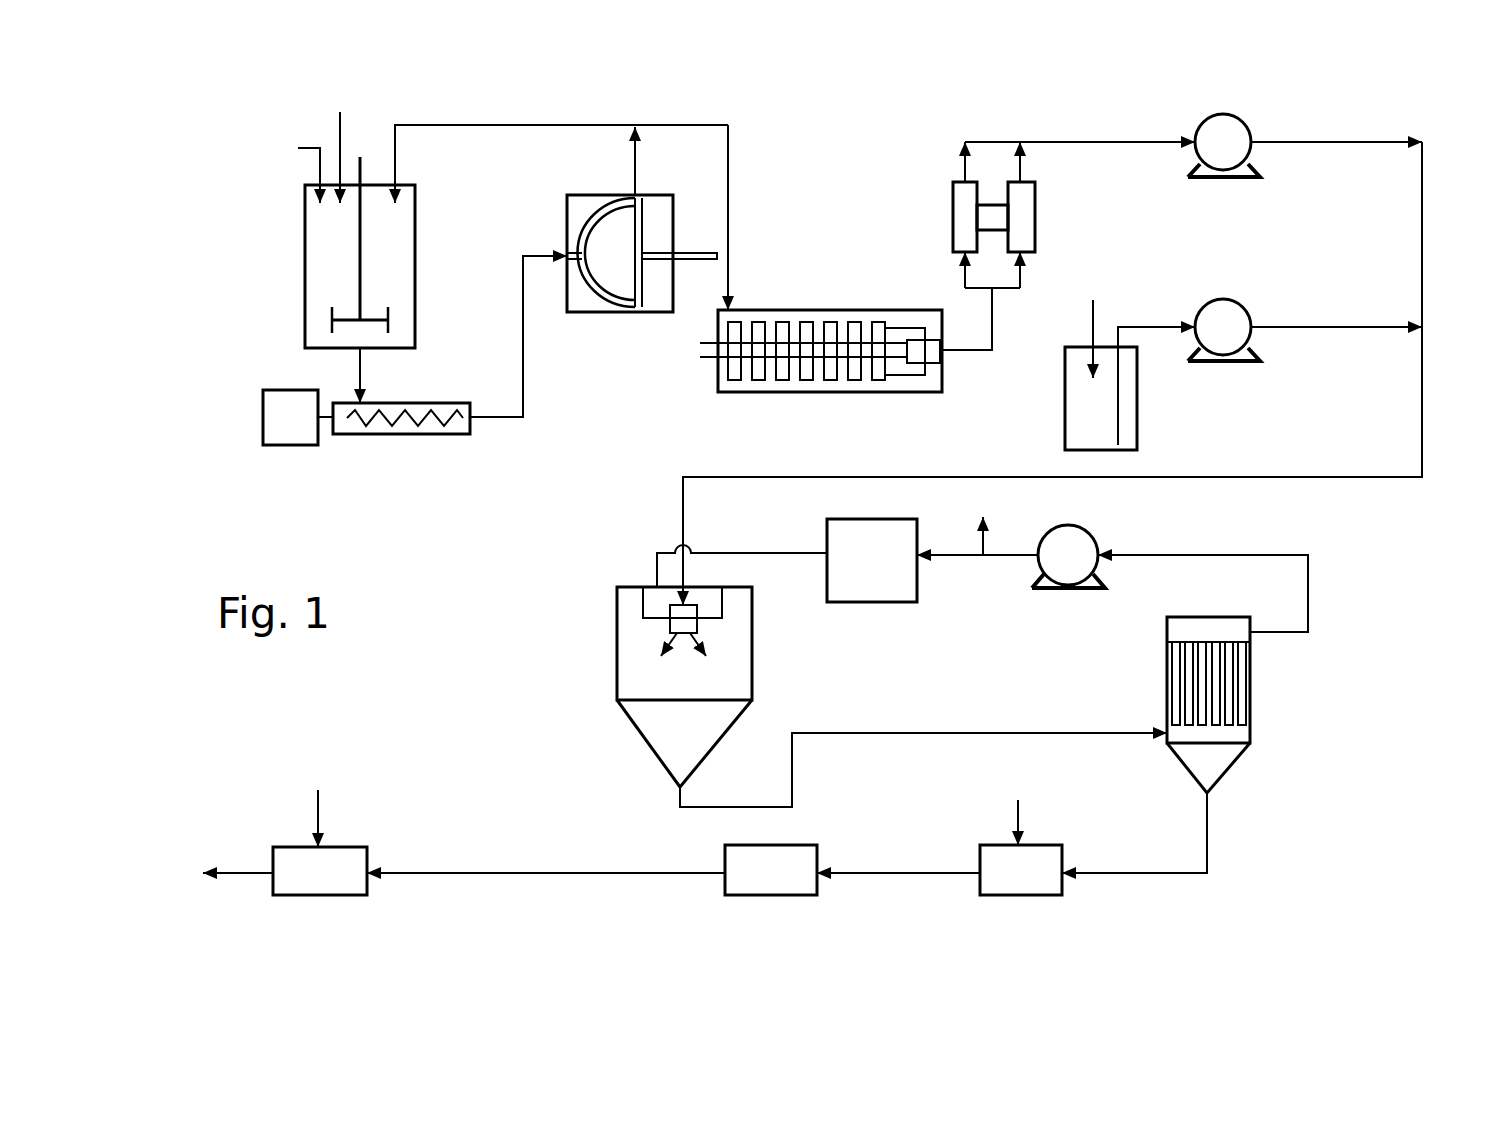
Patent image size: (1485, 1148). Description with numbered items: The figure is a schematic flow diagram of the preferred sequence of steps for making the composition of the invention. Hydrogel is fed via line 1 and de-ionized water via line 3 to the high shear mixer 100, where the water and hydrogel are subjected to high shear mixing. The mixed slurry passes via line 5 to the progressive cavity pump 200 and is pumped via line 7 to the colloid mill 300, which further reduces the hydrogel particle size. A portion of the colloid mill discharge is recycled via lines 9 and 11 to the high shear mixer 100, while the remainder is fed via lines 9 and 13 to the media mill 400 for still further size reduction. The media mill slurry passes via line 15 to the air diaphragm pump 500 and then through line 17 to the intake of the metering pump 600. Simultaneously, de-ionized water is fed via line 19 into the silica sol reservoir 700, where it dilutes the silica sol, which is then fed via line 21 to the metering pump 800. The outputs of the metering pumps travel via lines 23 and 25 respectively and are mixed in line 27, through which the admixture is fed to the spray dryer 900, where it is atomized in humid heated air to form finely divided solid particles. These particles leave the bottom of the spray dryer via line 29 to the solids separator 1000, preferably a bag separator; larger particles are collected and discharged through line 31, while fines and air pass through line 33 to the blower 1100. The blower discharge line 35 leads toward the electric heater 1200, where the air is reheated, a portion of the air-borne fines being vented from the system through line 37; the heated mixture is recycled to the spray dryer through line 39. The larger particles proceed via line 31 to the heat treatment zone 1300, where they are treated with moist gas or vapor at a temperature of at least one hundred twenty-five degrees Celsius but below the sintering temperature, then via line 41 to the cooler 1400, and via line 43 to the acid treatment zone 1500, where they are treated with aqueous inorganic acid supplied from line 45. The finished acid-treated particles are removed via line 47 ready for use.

The line 1 is at (317, 150).
The line 3 is at (341, 142).
The line 5 is at (358, 384).
The line 7 is at (523, 322).
The line 9 is at (635, 162).
The line 11 is at (512, 125).
The line 13 is at (728, 157).
The line 15 is at (992, 325).
The line 17 is at (1078, 142).
The line 19 is at (1092, 335).
The line 21 is at (1136, 327).
The line 23 is at (1307, 142).
The line 25 is at (1307, 327).
The line 27 is at (1422, 232).
The line 29 is at (968, 733).
The line 31 is at (1208, 842).
The line 33 is at (1308, 607).
The blower outlet stream to heater 35 is at (962, 555).
The line 37 is at (985, 543).
The line 39 is at (710, 553).
The line 41 is at (875, 873).
The line 43 is at (573, 873).
The line 45 is at (320, 800).
The line 47 is at (240, 871).
The high shear mixer 100 is at (415, 215).
The progressive cavity pump 200 is at (448, 434).
The colloid mill 300 is at (600, 313).
The media mill 400 is at (846, 392).
The air diaphragm pump 500 is at (953, 215).
The metering pump 600 is at (1210, 177).
The silica sol reservoir 700 is at (1065, 400).
The metering pump 800 is at (1240, 360).
The spray dryer 900 is at (617, 648).
The solids separator 1000 is at (1250, 657).
The blower 1100 is at (1053, 588).
The electric heater 1200 is at (862, 602).
The heat treatment zone 1300 is at (1058, 895).
The cooler 1400 is at (787, 895).
The acid treatment zone 1500 is at (330, 895).